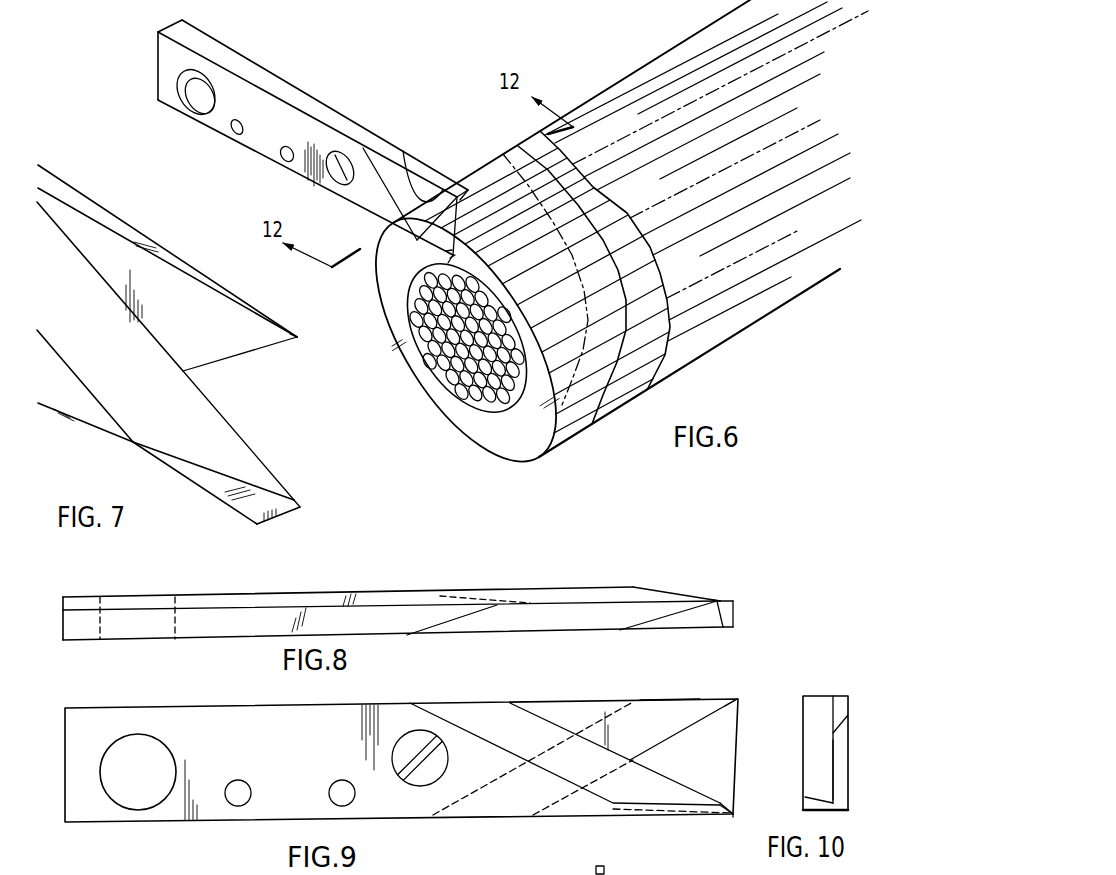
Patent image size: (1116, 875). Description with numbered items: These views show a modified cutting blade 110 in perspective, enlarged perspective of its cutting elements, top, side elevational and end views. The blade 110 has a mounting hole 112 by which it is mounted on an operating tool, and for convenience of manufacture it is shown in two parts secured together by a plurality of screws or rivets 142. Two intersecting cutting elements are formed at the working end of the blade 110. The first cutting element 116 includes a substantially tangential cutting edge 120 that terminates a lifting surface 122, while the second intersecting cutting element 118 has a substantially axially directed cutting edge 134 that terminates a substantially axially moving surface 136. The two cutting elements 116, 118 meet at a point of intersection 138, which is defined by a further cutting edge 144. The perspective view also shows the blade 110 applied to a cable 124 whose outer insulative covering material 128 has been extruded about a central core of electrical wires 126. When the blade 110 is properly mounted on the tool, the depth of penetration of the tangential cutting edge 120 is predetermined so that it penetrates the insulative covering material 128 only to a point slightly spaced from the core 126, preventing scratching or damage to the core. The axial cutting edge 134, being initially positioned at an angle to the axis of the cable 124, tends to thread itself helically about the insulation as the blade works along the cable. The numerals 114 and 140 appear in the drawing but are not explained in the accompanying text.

In FIG. 6, the cutting blade 110 is at (257, 63).
In FIG. 7, the cutting blade 110 is at (117, 212).
In FIG. 8, the cutting blade 110 is at (202, 595).
In FIG. 9, the cutting blade 110 is at (208, 704).
In FIG. 10, the cutting blade 110 is at (853, 687).
In FIG. 6, the mounting hole 112 is at (191, 101).
In FIG. 8, the mounting hole 112 is at (122, 606).
In FIG. 9, the mounting hole 112 is at (116, 749).
In FIG. 6, the blade side face 114 is at (222, 118).
In FIG. 6, the first cutting element 116 is at (448, 262).
In FIG. 7, the first cutting element 116 is at (303, 508).
In FIG. 8, the first cutting element 116 is at (737, 612).
In FIG. 9, the first cutting element 116 is at (722, 801).
In FIG. 6, the second intersecting cutting element 118 is at (468, 199).
In FIG. 7, the second intersecting cutting element 118 is at (289, 344).
In FIG. 8, the second intersecting cutting element 118 is at (708, 594).
In FIG. 9, the second intersecting cutting element 118 is at (721, 712).
In FIG. 6, the tangential cutting edge 120 is at (450, 254).
In FIG. 7, the tangential cutting edge 120 is at (285, 524).
In FIG. 8, the tangential cutting edge 120 is at (733, 623).
In FIG. 9, the tangential cutting edge 120 is at (733, 817).
In FIG. 10, the tangential cutting edge 120 is at (814, 812).
In FIG. 6, the lifting surface 122 is at (446, 251).
In FIG. 7, the lifting surface 122 is at (255, 528).
In FIG. 8, the lifting surface 122 is at (720, 628).
In FIG. 9, the lifting surface 122 is at (737, 817).
In FIG. 10, the lifting surface 122 is at (806, 796).
In FIG. 6, the cable 124 is at (588, 112).
In FIG. 6, the central core of electrical wires 126 is at (456, 388).
In FIG. 6, the outer insulative covering material 128 is at (515, 447).
In FIG. 6, the axially directed cutting edge 134 is at (472, 204).
In FIG. 7, the axially directed cutting edge 134 is at (252, 352).
In FIG. 8, the axially directed cutting edge 134 is at (733, 600).
In FIG. 9, the axially directed cutting edge 134 is at (683, 730).
In FIG. 10, the axially directed cutting edge 134 is at (836, 733).
In FIG. 6, the axially moving surface 136 is at (430, 172).
In FIG. 9, the axially moving surface 136 is at (667, 705).
In FIG. 6, the point of intersection 138 is at (414, 152).
In FIG. 7, the point of intersection 138 is at (185, 372).
In FIG. 9, the point of intersection 138 is at (632, 761).
In FIG. 6, the circumferential cut line 140 is at (641, 224).
In FIG. 6, the screws or rivets 142 is at (282, 161).
In FIG. 9, the screws or rivets 142 is at (328, 785).
In FIG. 7, the further cutting edge 144 is at (250, 443).
In FIG. 9, the further cutting edge 144 is at (684, 786).
In FIG. 10, the further cutting edge 144 is at (835, 778).